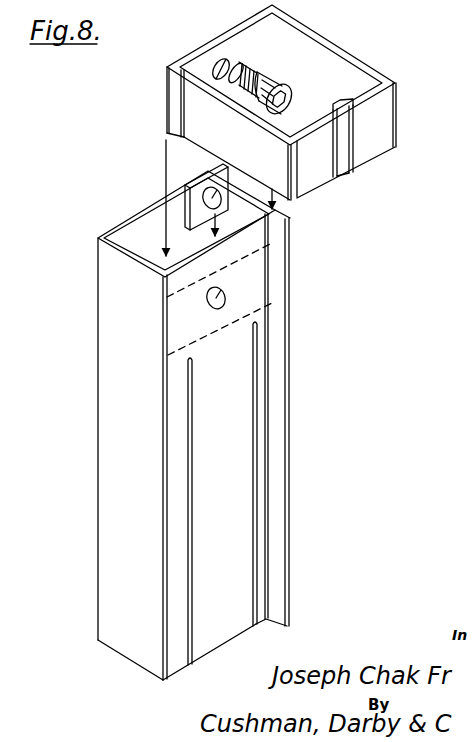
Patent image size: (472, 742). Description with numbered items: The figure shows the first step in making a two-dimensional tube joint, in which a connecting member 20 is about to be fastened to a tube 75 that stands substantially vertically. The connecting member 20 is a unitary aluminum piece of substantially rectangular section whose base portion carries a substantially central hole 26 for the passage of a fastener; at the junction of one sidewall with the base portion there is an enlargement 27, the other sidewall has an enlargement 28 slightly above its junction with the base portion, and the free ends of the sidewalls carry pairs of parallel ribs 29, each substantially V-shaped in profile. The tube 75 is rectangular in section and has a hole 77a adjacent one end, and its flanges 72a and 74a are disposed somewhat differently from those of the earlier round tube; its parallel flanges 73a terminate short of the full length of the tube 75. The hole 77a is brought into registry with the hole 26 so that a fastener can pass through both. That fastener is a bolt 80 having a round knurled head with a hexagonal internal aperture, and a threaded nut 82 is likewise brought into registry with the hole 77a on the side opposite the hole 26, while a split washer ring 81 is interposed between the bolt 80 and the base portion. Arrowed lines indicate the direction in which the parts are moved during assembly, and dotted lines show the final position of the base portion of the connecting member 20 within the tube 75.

The connecting member 20 is at (324, 33).
The enlargement 27 is at (287, 15).
The enlargement 28 is at (165, 89).
The pairs of parallel ribs 29 is at (397, 81).
The central hole 26 is at (214, 62).
The split washer ring 81 is at (247, 68).
The bolt 80 is at (285, 83).
The threaded nut 82 is at (189, 197).
The tube 75 is at (296, 307).
The flange 72a is at (278, 435).
The parallel flanges 73a is at (255, 510).
The flange 74a is at (164, 478).
The hole 77a is at (214, 309).